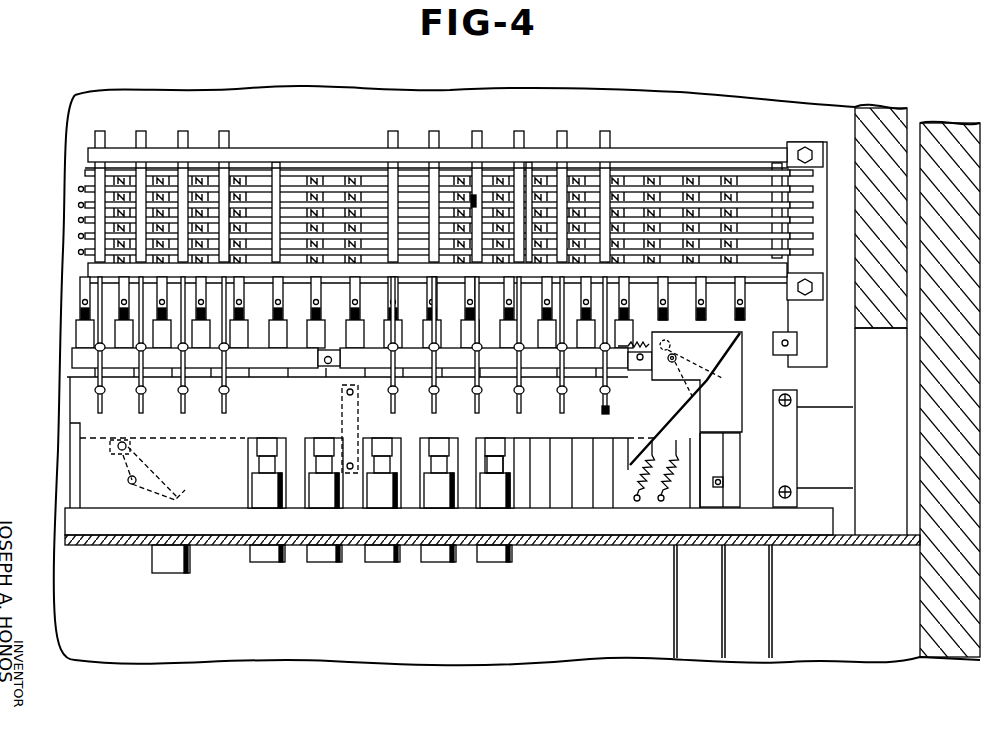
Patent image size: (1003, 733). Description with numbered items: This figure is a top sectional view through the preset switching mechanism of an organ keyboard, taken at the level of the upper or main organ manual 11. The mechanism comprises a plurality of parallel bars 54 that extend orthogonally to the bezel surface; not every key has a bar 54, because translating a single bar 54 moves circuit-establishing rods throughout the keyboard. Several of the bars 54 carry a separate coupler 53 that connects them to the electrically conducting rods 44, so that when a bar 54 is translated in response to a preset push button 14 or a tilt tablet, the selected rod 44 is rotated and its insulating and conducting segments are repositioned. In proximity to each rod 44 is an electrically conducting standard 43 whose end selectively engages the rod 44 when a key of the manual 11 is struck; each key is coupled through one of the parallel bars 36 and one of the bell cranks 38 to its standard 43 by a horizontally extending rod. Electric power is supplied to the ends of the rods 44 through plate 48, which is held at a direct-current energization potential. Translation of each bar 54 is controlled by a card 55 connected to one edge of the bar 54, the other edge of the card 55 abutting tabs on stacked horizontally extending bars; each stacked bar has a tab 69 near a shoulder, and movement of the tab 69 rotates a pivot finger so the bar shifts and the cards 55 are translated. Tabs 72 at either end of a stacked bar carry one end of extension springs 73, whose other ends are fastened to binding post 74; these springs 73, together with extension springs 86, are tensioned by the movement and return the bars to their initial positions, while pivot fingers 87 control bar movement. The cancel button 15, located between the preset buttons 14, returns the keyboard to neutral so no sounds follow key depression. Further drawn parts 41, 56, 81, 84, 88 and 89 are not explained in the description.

The upper or main organ manual 11 is at (600, 646).
The preset push buttons 14 is at (268, 563).
The cancel button 15 is at (173, 574).
The parallel bars 36 is at (85, 330).
The bell cranks 38 is at (80, 298).
The pawl 41 is at (85, 287).
The electrically conducting standard 43 is at (627, 178).
The electrically conducting rods 44 is at (811, 188).
The plate 48 is at (754, 159).
The coupler 53 is at (466, 198).
The parallel bars 54 is at (141, 131).
The card 55 is at (600, 332).
The collar 56 is at (613, 407).
The tab 69 is at (513, 448).
The tabs 72 is at (80, 423).
The extension springs 73 is at (647, 482).
The binding post 74 is at (640, 502).
The link 81 is at (188, 500).
The lever 84 is at (158, 470).
The extension springs 86 is at (676, 353).
The pivot fingers 87 is at (497, 462).
The bracket 88 is at (327, 365).
The link 89 is at (352, 388).